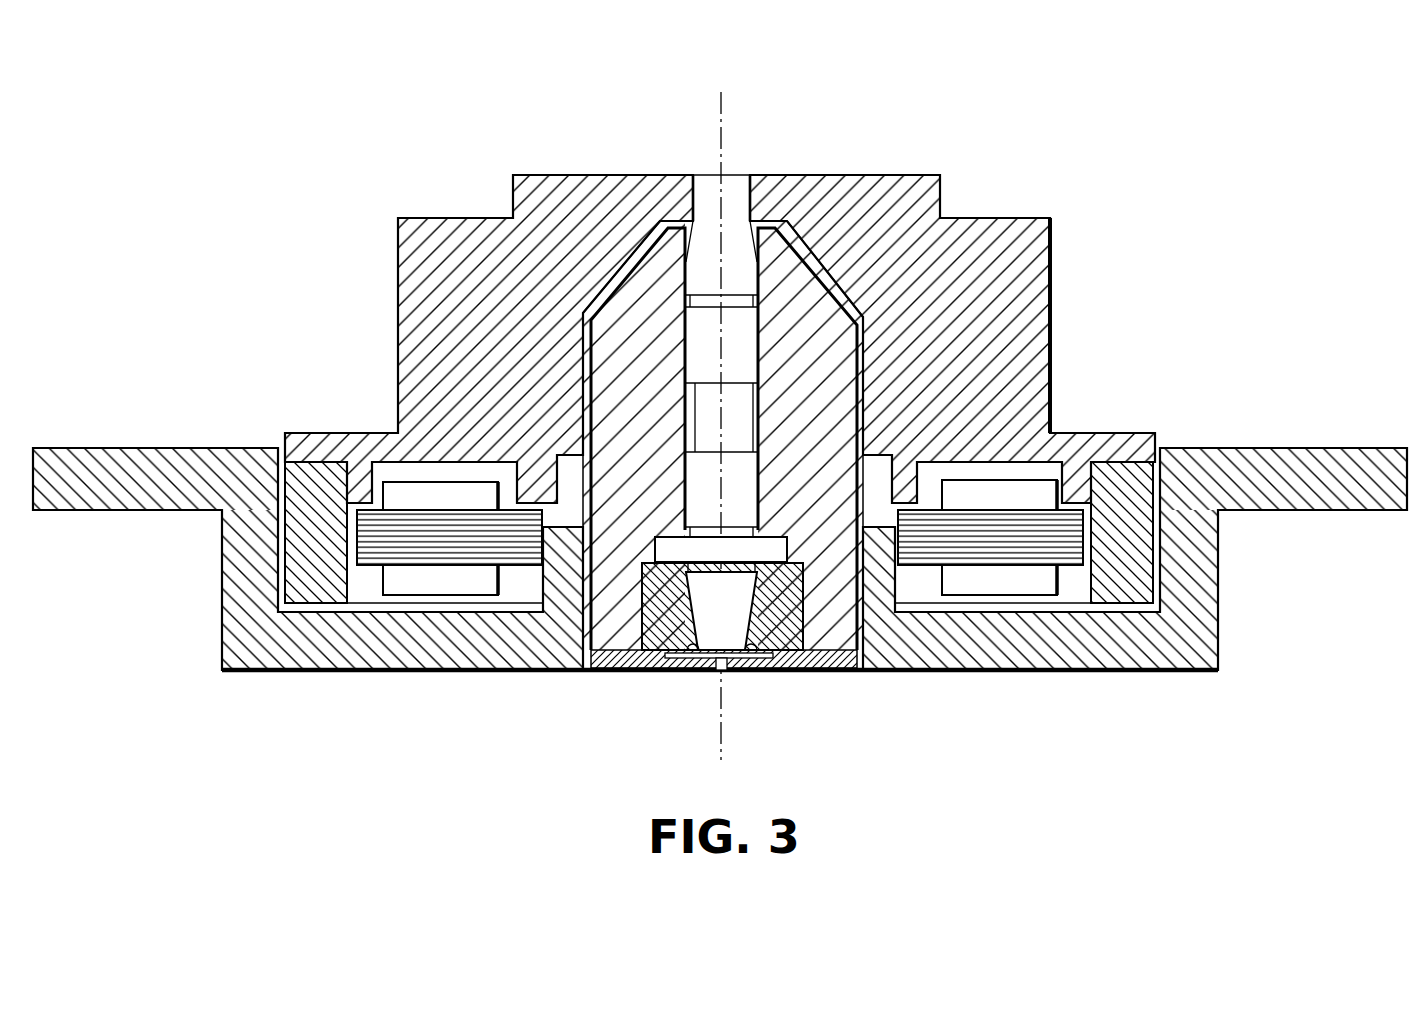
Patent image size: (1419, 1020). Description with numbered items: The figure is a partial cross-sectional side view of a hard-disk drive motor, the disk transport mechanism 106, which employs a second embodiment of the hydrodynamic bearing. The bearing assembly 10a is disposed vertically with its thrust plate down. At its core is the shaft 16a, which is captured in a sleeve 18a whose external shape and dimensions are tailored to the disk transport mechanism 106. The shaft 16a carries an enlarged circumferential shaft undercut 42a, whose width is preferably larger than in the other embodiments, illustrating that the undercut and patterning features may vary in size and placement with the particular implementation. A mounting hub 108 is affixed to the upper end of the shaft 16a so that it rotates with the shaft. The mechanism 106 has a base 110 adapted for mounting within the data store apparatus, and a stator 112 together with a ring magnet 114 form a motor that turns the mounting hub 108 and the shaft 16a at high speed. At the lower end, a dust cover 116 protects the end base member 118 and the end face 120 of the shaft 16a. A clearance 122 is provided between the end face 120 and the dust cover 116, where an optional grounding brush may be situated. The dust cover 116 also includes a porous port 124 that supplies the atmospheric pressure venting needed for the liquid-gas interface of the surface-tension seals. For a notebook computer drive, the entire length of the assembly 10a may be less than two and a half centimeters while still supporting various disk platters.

The disk transport mechanism 106 is at (276, 294).
The mounting hub 108 is at (852, 175).
The base 110 is at (531, 673).
The stator 112 is at (466, 492).
The ring magnet 114 is at (1137, 510).
The dust cover 116 is at (838, 674).
The end base member 118 is at (752, 673).
The end face 120 is at (697, 673).
The clearance 122 is at (680, 673).
The porous port 124 is at (727, 675).
The bearing assembly 10a is at (731, 175).
The shaft 16a is at (692, 364).
The sleeve 18a is at (652, 242).
The shaft undercut 42a is at (742, 410).